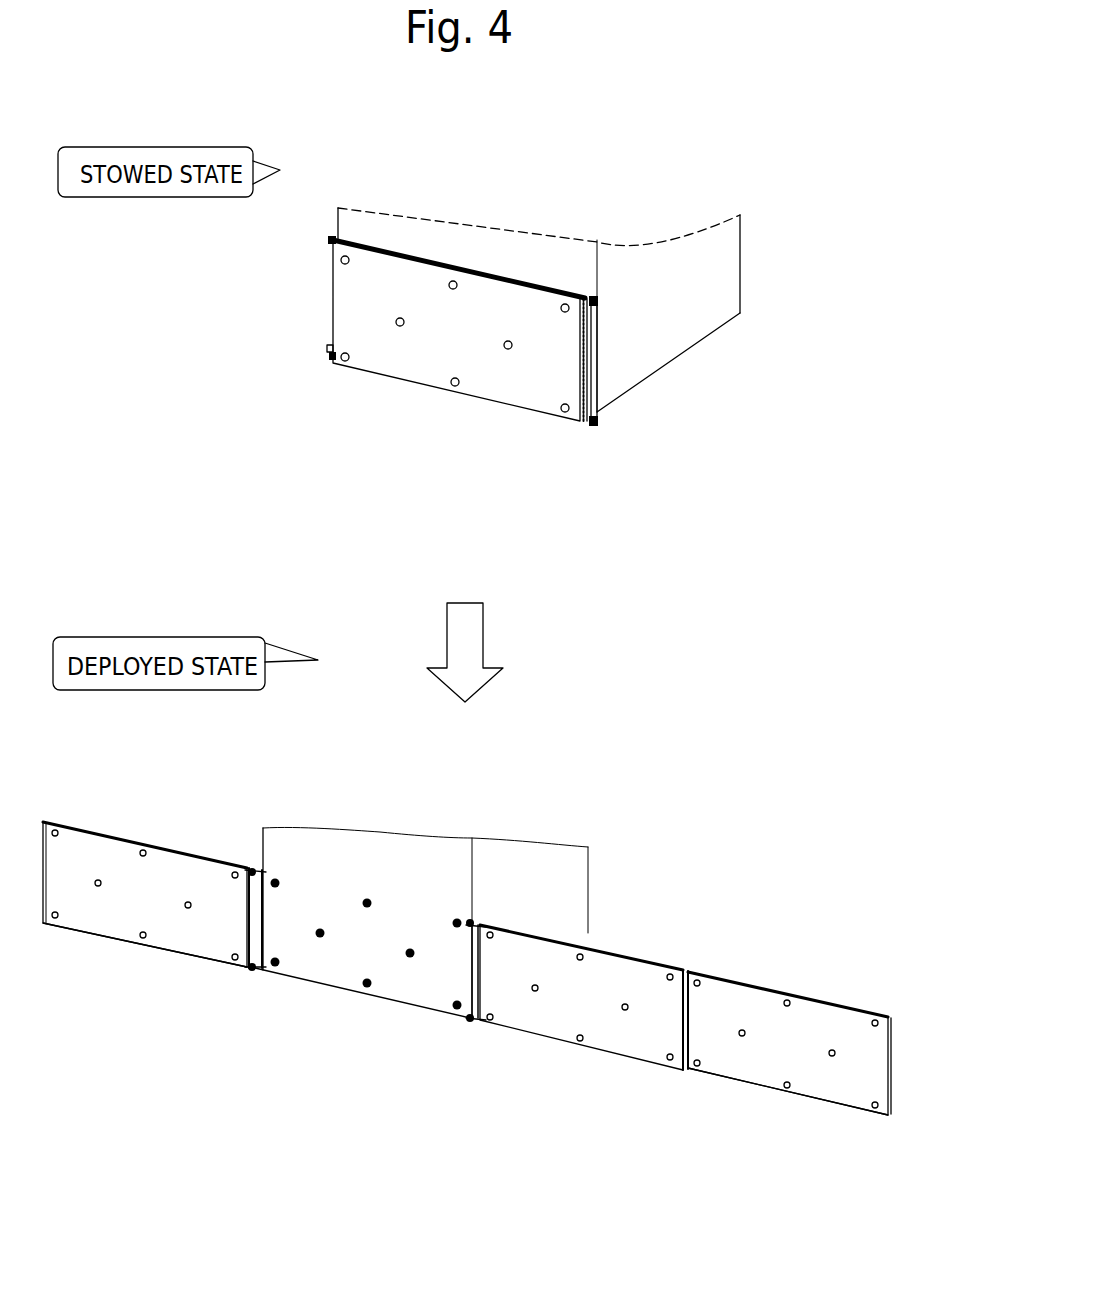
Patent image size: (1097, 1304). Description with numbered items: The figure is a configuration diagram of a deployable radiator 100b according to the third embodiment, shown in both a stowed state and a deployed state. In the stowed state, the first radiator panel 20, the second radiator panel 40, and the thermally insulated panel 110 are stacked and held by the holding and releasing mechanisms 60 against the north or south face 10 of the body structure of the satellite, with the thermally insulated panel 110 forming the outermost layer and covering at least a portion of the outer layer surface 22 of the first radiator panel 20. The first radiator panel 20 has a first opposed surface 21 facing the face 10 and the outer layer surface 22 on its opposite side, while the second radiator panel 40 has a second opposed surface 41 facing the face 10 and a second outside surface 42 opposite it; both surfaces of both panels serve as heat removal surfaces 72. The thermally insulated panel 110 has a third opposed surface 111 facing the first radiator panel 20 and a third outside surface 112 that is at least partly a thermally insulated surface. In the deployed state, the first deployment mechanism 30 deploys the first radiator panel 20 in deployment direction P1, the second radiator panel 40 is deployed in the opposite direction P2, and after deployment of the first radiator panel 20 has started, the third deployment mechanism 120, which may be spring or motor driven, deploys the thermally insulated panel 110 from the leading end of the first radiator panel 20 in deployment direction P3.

The deployable radiator 100b is at (600, 134).
The north or south face of the body structure of the satellite 10 is at (555, 262).
The first radiator panel 20 is at (628, 1040).
The first opposed surface 21 is at (517, 1013).
The outer layer surface 22 is at (558, 990).
The first deployment mechanism 30 is at (595, 305).
The second radiator panel 40 is at (225, 943).
The second opposed surface 41 is at (125, 922).
The second outside surface 42 is at (163, 897).
The holding and releasing mechanisms 60 is at (508, 350).
The heat removal surfaces 72 is at (100, 875).
The thermally insulated panel 110 is at (445, 350).
The third opposed surface 111 is at (853, 1083).
The third outside surface 112 is at (827, 1047).
The third deployment mechanism 120 is at (330, 242).
The deployment direction of the first radiator panel P1 is at (494, 1035).
The deployment direction of the second radiator panel P2 is at (323, 998).
The deployment direction of the thermally insulated panel P3 is at (645, 948).